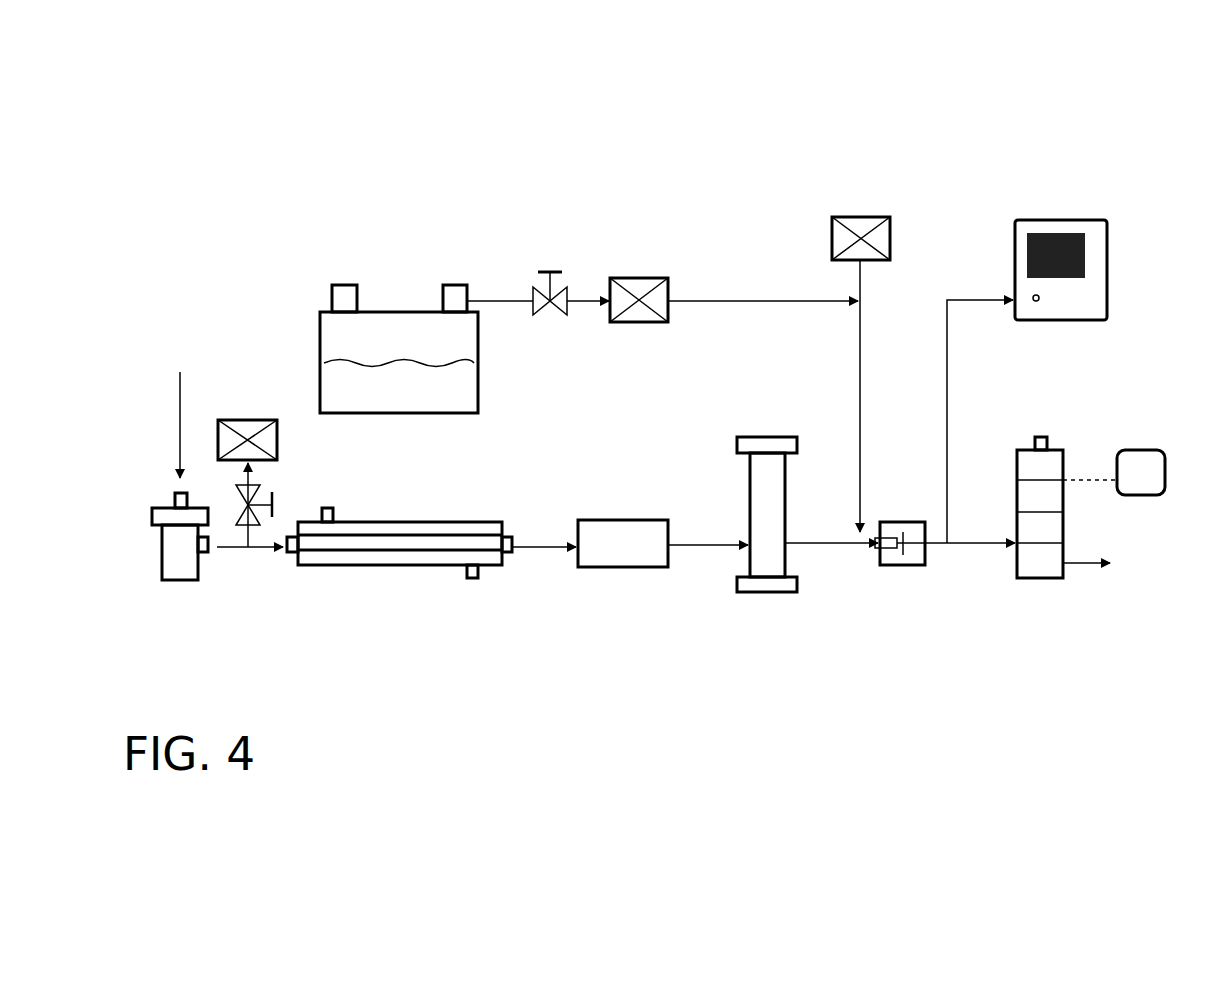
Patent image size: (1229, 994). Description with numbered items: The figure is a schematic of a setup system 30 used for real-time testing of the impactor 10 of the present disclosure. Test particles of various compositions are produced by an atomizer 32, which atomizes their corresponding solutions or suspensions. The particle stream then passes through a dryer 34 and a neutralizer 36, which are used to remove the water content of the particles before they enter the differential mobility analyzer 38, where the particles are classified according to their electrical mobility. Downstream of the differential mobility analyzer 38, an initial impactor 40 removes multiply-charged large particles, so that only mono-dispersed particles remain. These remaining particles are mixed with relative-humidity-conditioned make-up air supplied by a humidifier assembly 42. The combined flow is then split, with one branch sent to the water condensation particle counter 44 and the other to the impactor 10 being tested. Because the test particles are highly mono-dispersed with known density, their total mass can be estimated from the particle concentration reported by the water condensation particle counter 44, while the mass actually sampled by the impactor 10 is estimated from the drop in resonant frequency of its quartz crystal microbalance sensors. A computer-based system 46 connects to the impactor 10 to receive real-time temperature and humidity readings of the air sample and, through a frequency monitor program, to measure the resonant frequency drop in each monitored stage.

The setup system 30 is at (285, 130).
The atomizer 32 is at (172, 553).
The dryer 34 is at (395, 522).
The neutralizer 36 is at (593, 520).
The differential mobility analyzer (DMA) 38 is at (797, 582).
The initial impactor 40 is at (925, 548).
The humidifier assembly 42 is at (432, 285).
The water condensation particle counter (CPC) 44 is at (1070, 220).
The impactor 10 is at (1058, 442).
The computer-based system 46 is at (1145, 450).